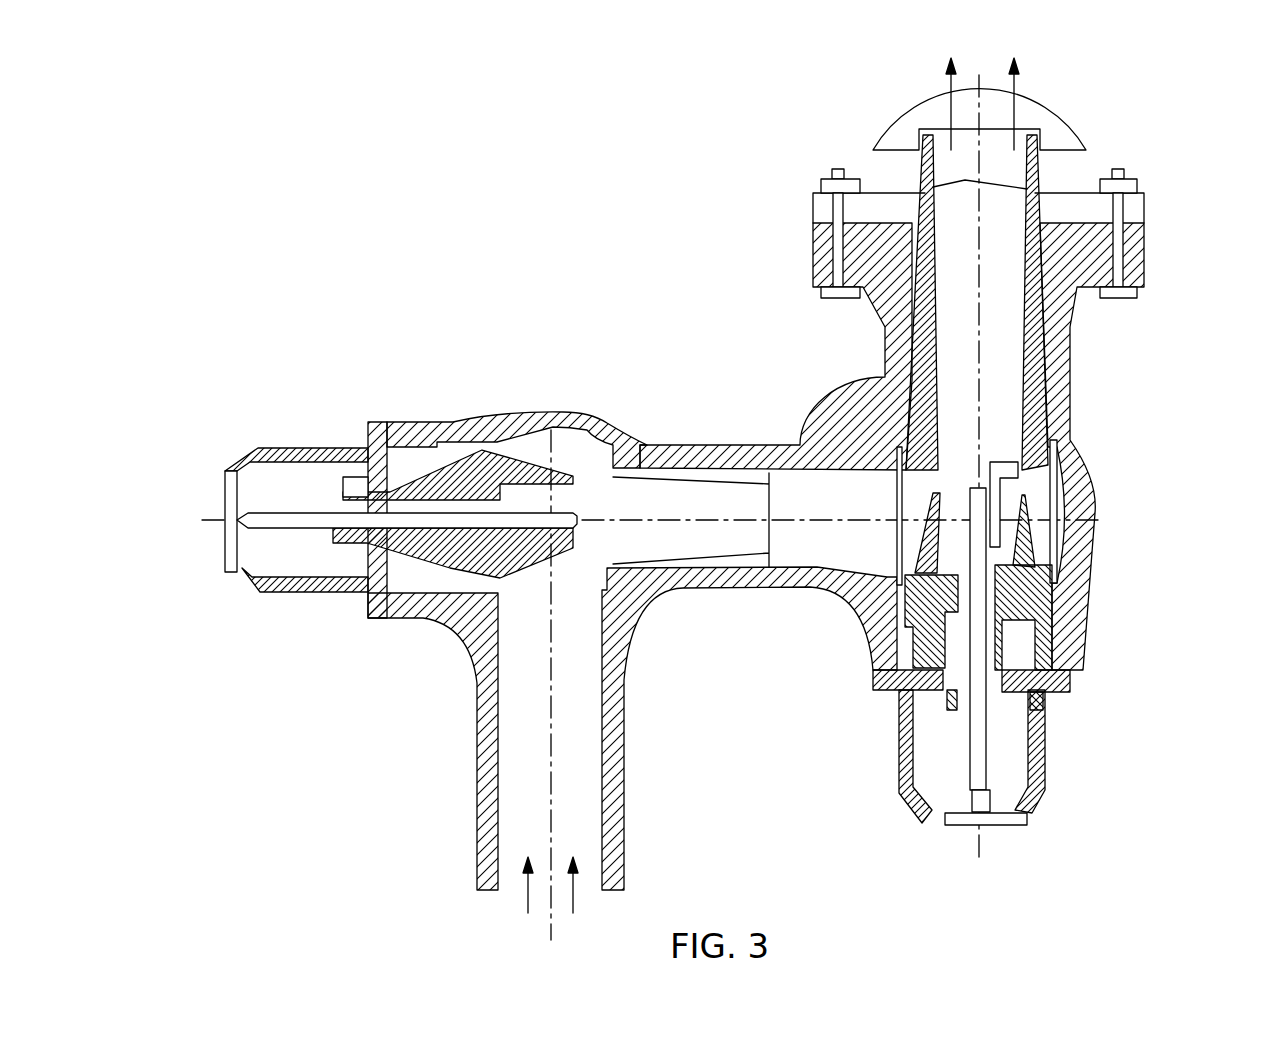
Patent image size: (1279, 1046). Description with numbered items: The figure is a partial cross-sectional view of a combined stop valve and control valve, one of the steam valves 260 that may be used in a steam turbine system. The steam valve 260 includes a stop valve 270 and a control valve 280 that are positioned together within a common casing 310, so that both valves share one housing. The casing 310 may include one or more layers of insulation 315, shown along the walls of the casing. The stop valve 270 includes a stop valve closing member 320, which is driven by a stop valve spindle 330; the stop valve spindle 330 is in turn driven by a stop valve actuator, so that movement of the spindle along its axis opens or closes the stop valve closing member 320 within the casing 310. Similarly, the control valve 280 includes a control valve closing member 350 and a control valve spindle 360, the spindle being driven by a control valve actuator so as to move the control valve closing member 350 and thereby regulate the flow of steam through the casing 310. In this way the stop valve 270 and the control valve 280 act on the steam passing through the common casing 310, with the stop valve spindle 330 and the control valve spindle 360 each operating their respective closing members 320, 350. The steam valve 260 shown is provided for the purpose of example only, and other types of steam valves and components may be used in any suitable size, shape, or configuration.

The steam valve 260 is at (1152, 85).
The control valve 280 is at (1148, 233).
The stop valve 270 is at (505, 403).
The stop valve closing member 320 is at (623, 455).
The stop valve spindle 330 is at (253, 513).
The control valve closing member 350 is at (1003, 485).
The casing 310 is at (742, 590).
The insulation 315 is at (637, 650).
The control valve spindle 360 is at (985, 750).